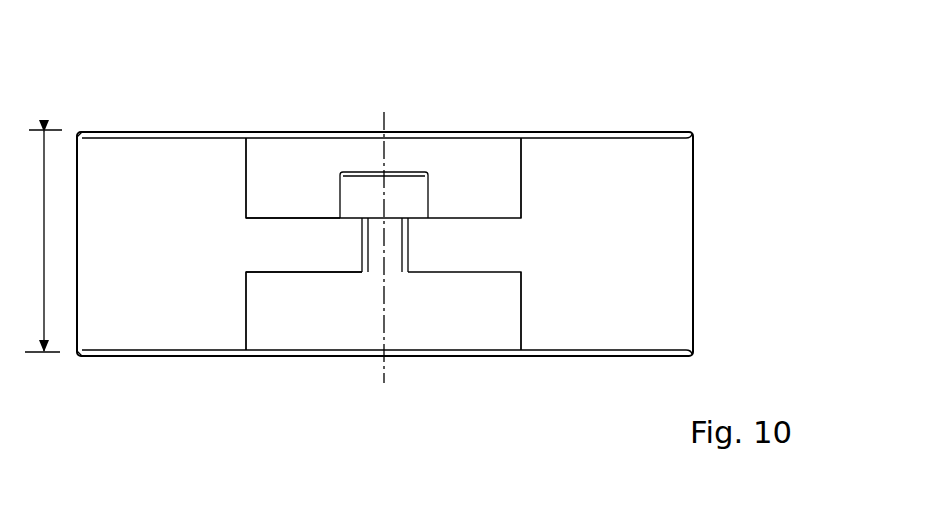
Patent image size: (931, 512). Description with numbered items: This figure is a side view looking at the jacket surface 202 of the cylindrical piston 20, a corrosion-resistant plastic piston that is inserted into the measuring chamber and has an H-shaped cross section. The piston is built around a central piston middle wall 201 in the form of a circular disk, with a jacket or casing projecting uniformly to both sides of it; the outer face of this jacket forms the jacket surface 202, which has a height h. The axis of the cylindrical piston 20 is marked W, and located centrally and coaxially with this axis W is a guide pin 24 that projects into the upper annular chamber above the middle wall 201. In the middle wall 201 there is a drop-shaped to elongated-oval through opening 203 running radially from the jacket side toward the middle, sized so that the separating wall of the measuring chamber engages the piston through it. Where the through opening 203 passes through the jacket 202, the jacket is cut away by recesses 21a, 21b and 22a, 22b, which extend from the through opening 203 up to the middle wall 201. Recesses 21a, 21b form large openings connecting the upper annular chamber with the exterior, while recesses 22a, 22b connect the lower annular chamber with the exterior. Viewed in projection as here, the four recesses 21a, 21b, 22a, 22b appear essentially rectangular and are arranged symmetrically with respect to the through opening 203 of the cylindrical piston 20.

The cylindrical piston 20 is at (703, 209).
The jacket surface 202 is at (662, 257).
The recess 21a is at (248, 172).
The recess 21b is at (518, 172).
The recess 22a is at (245, 342).
The recess 22b is at (519, 334).
The guide pin 24 is at (407, 185).
The piston middle wall 201 is at (297, 255).
The through opening 203 is at (366, 273).
The cylindrical piston axis W is at (387, 123).
The height h is at (48, 241).